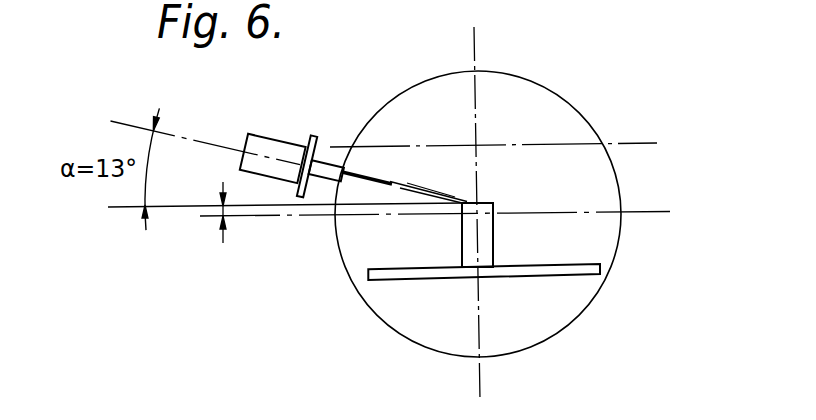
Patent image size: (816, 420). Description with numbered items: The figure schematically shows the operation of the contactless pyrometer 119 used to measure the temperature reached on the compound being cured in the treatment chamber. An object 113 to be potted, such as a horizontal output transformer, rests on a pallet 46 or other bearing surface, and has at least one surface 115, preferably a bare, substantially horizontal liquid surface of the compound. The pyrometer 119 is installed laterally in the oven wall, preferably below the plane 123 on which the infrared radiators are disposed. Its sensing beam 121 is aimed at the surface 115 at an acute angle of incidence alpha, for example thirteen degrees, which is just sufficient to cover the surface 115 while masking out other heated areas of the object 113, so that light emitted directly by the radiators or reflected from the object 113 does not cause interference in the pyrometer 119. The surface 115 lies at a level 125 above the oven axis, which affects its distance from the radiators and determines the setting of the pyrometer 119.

The pallet 46 is at (388, 278).
The object 113 is at (493, 249).
The surface 115 is at (480, 201).
The pyrometer 119 is at (258, 143).
The sensing beam 121 is at (388, 182).
The plane 123 is at (640, 142).
The level 125 is at (230, 212).